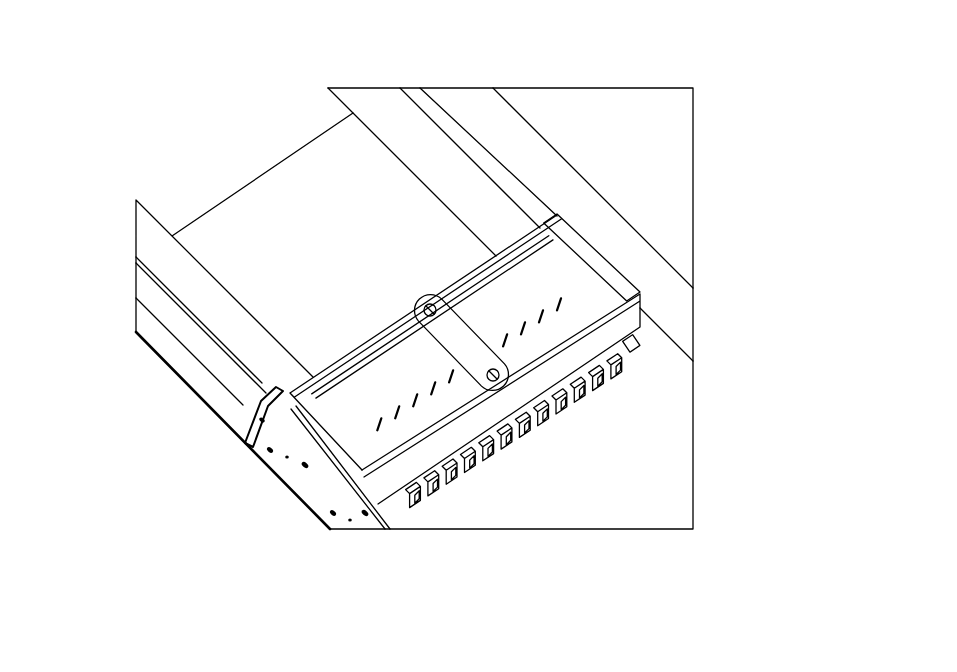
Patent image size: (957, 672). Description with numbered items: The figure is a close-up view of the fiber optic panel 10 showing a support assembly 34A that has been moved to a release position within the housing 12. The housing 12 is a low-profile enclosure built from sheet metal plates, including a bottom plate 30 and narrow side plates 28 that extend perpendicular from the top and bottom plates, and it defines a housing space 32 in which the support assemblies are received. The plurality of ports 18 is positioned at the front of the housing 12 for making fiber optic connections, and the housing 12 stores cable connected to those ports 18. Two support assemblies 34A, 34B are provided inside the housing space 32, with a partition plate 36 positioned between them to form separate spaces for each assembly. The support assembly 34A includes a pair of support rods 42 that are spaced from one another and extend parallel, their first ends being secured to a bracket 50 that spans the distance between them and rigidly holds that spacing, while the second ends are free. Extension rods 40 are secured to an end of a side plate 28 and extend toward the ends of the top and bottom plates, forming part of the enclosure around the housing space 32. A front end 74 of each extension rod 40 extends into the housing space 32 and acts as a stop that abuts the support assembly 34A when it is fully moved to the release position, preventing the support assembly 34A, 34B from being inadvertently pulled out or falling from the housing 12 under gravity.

The fiber optic panel 10 is at (144, 78).
The housing 12 is at (267, 212).
The ports 18 is at (580, 400).
The side plates 28 is at (302, 478).
The bottom plate 30 is at (328, 172).
The housing space 32 is at (597, 120).
The support assembly 34A is at (190, 207).
The support assembly 34B is at (655, 182).
The partition plate 36 is at (592, 275).
The extension rods 40 is at (185, 362).
The support rods 42 is at (378, 102).
The bracket 50 is at (258, 442).
The front end 74 is at (257, 402).